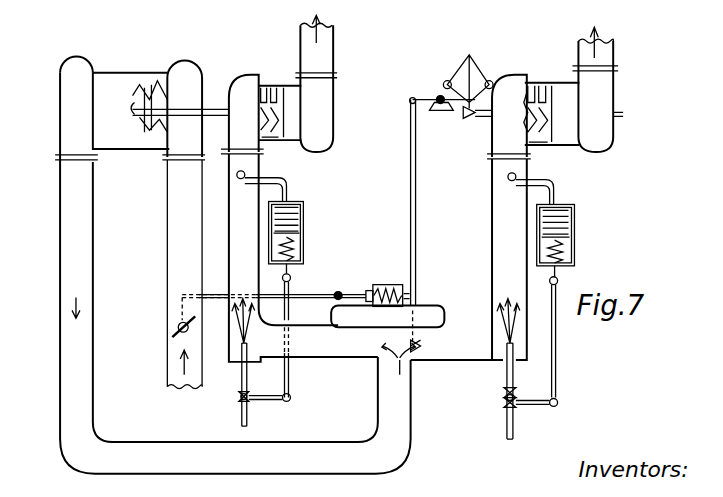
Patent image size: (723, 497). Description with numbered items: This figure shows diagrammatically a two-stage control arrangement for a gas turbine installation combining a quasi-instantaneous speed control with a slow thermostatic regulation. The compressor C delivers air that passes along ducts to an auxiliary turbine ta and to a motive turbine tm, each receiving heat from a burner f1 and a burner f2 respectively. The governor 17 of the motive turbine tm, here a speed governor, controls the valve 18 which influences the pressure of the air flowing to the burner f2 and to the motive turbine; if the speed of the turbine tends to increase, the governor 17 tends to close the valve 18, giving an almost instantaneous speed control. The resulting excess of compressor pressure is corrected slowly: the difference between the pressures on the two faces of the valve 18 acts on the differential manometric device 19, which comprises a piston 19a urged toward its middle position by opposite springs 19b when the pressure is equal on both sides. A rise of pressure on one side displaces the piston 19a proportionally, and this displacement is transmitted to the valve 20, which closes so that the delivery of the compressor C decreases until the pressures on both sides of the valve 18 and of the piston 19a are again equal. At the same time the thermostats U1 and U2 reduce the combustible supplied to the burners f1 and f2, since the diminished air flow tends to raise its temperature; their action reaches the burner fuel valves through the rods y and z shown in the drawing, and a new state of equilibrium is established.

The compressor C is at (128, 92).
The auxiliary turbine ta is at (280, 95).
The motive turbine tm is at (560, 98).
The governor 17 is at (468, 70).
The thermostat U1 is at (240, 178).
The thermostat U2 is at (510, 186).
The differential manometric device 19 is at (390, 283).
The piston 19a is at (398, 352).
The opposite springs 19b is at (406, 295).
The valve 18 is at (427, 344).
The valve 20 is at (179, 330).
The burner f1 is at (247, 363).
The burner f2 is at (497, 369).
The control rod y is at (292, 379).
The control rod z is at (565, 380).